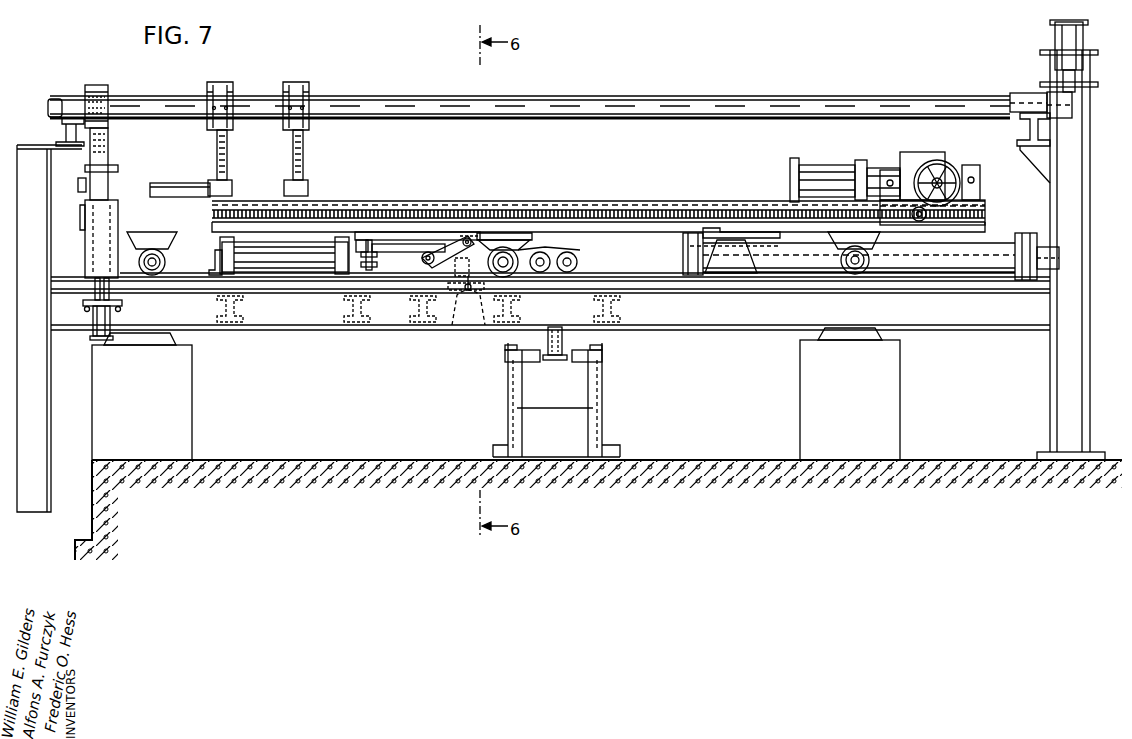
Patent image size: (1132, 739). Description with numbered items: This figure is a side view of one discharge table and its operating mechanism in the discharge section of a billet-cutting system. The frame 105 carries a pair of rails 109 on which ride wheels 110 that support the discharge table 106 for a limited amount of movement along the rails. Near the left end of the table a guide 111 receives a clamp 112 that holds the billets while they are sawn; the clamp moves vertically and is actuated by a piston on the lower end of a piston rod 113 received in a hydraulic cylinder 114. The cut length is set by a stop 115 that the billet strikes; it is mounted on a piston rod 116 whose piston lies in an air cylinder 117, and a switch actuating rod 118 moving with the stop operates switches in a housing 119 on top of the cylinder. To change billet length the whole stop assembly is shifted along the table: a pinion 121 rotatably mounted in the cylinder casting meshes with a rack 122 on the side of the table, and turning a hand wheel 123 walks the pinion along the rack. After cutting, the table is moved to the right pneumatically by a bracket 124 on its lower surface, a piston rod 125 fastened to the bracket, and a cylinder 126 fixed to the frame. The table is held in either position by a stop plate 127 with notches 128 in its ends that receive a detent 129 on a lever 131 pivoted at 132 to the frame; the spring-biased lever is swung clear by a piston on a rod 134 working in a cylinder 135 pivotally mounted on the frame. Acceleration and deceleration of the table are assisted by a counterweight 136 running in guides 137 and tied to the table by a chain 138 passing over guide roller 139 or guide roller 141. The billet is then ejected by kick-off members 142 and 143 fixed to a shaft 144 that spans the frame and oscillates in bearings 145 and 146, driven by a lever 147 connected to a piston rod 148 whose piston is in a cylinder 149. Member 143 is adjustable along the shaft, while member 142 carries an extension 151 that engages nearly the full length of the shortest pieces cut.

The frame 105 is at (720, 323).
The discharge table 106 is at (212, 226).
The rails 109 is at (183, 283).
The wheels 110 is at (166, 262).
The guide 111 is at (95, 239).
The clamp 112 is at (101, 152).
The piston rod 113 is at (95, 285).
The hydraulic cylinder 114 is at (98, 316).
The stop 115 is at (794, 178).
The piston rod 116 is at (822, 180).
The air cylinder 117 is at (876, 170).
The switch actuating rod 118 is at (842, 165).
The housing 119 is at (912, 160).
The pinion 121 is at (926, 222).
The rack 122 is at (670, 201).
The hand wheel 123 is at (948, 170).
The bracket 124 is at (368, 232).
The piston rod 125 is at (376, 270).
The cylinder 126 is at (266, 256).
The stop plate 127 is at (420, 244).
The notches 128 is at (386, 240).
The detent 129 is at (478, 236).
The lever 131 is at (448, 254).
The pivot 132 is at (422, 258).
The rod 134 is at (474, 323).
The cylinder 135 is at (455, 324).
The counterweight 136 is at (563, 399).
The guides 137 is at (600, 418).
The chain 138 is at (526, 245).
The guide roller 139 is at (541, 253).
The guide roller 141 is at (578, 259).
The kick-off member 142 is at (226, 150).
The kick-off member 143 is at (304, 150).
The shaft 144 is at (392, 96).
The bearing 145 is at (94, 86).
The bearing 146 is at (1027, 93).
The lever 147 is at (1068, 99).
The piston rod 148 is at (1073, 80).
The cylinder 149 is at (1076, 40).
The extension 151 is at (185, 186).